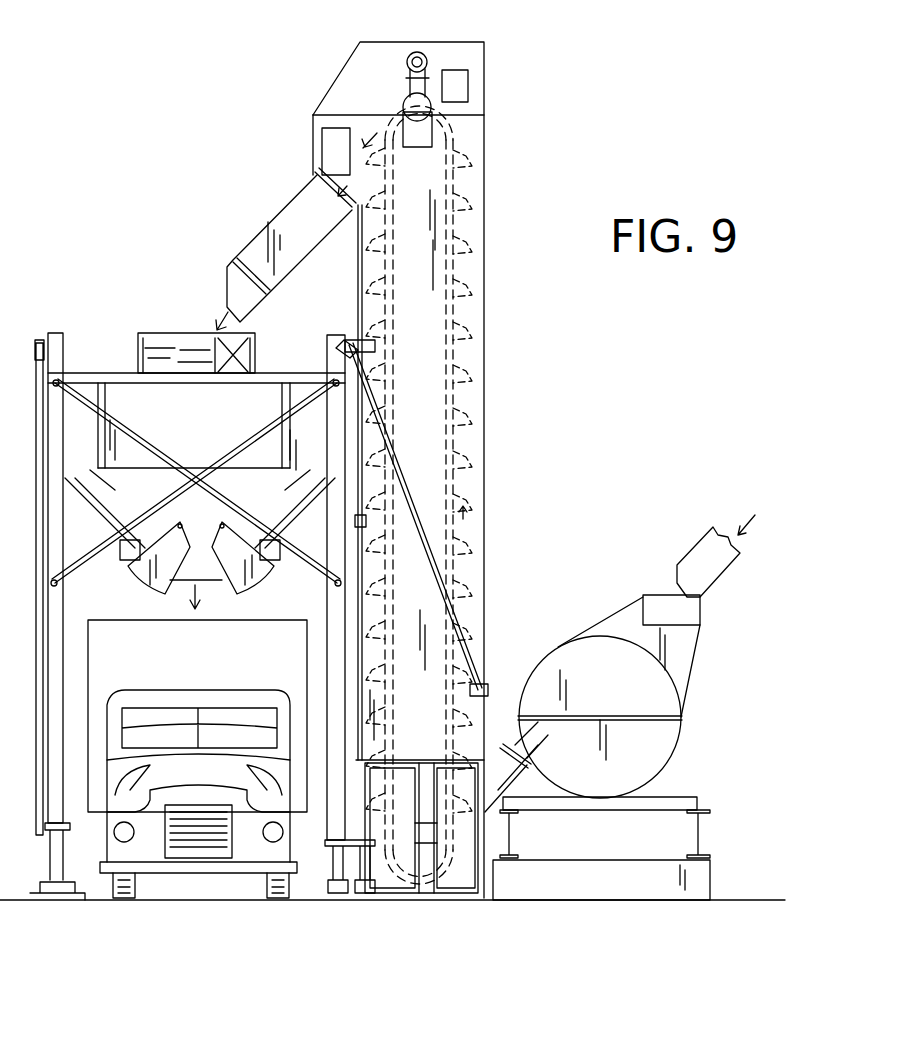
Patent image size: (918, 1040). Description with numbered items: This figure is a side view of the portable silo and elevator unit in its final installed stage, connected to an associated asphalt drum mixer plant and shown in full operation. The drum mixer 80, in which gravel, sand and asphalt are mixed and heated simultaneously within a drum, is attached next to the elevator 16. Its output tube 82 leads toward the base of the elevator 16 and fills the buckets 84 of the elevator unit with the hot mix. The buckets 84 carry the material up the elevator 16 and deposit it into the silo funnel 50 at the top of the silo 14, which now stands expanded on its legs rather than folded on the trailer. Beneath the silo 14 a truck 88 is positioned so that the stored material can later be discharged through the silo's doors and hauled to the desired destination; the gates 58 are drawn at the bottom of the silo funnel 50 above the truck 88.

The silo 14 is at (276, 372).
The elevator 16 is at (484, 344).
The silo funnel 50 is at (222, 424).
The discharge gates 58 is at (253, 574).
The drum mixer 80 is at (603, 633).
The output tube 82 is at (495, 755).
The buckets 84 is at (460, 472).
The truck 88 is at (213, 672).